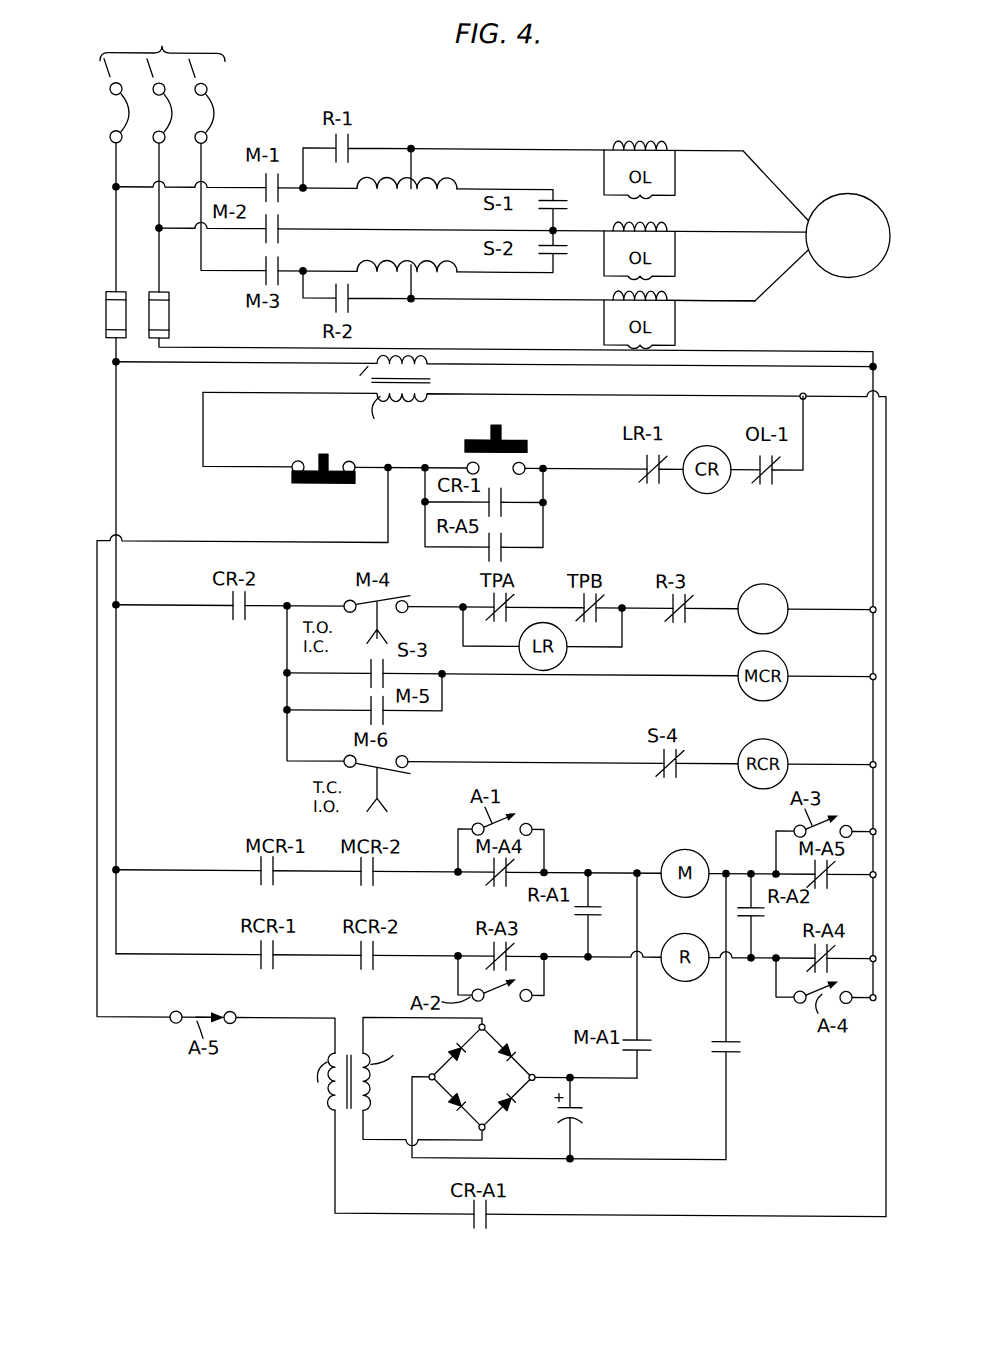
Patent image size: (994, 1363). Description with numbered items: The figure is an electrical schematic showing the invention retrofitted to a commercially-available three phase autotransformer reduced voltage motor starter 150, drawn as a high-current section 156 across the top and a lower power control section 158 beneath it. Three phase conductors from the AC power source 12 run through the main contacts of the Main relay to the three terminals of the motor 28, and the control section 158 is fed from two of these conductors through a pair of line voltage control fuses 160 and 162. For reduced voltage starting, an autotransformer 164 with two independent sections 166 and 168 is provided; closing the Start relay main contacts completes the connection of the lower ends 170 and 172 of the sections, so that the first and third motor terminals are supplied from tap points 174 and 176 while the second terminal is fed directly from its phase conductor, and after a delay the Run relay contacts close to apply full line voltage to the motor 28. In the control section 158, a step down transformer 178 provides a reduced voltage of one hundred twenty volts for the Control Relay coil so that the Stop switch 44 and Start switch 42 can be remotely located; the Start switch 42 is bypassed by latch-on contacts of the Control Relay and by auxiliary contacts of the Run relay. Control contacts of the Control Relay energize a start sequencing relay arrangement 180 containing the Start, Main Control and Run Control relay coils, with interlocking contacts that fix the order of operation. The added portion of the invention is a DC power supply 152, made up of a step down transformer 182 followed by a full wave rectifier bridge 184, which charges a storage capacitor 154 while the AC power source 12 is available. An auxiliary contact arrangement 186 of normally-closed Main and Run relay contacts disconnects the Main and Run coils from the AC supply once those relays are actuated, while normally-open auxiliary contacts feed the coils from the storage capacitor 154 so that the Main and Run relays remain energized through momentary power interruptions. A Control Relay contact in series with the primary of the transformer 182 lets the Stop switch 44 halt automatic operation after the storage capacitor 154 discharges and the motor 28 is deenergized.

The AC power source 12 is at (225, 50).
The motor 28 is at (852, 190).
The Start switch 42 is at (452, 443).
The Stop switch 44 is at (279, 447).
The autotransformer starter 150 is at (670, 99).
The DC power supply 152 is at (562, 1005).
The storage capacitor 154 is at (583, 1108).
The high-current section 156 is at (790, 287).
The control section 158 is at (778, 325).
The line voltage control fuse 160 is at (121, 292).
The line voltage control fuse 162 is at (164, 292).
The autotransformer 164 is at (466, 177).
The autotransformer section 166 is at (457, 178).
The autotransformer section 168 is at (412, 262).
The lower end of autotransformer section 170 is at (463, 194).
The lower end of autotransformer section 172 is at (467, 274).
The autotransformer tap point 174 is at (410, 146).
The autotransformer tap point 176 is at (409, 297).
The step down transformer 178 is at (445, 376).
The start sequencing relay arrangement 180 is at (793, 577).
The step down transformer 182 is at (344, 995).
The full wave rectifier bridge 184 is at (497, 1079).
The auxiliary contact arrangement 186 is at (763, 1088).